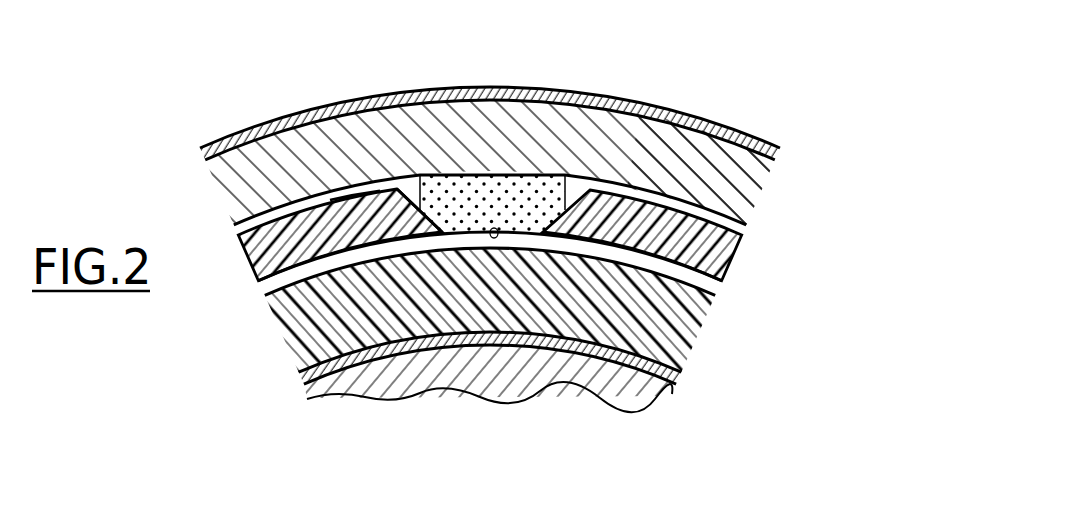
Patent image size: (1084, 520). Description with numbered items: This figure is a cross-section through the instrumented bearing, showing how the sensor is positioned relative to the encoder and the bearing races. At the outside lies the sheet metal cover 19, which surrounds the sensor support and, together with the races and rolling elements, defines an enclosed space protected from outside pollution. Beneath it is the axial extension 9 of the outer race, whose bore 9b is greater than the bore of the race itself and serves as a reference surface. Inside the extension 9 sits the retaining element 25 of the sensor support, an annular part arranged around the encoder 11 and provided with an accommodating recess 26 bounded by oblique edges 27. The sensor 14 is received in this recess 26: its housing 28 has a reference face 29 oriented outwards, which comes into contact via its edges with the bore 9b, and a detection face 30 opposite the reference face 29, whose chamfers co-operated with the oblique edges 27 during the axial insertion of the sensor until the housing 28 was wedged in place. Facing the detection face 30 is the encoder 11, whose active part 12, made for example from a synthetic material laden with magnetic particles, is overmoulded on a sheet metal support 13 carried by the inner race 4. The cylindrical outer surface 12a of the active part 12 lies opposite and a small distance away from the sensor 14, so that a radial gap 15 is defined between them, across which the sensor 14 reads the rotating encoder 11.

The inner race 4 is at (652, 393).
The axial extension 9 is at (282, 157).
The bore 9b is at (257, 208).
The encoder 11 is at (704, 178).
The active part 12 is at (653, 312).
The cylindrical outer surface 12a is at (703, 284).
The sheet metal support 13 is at (683, 376).
The sensor 14 is at (470, 243).
The radial gap 15 is at (578, 193).
The cover 19 is at (326, 110).
The retaining element 25 is at (356, 193).
The accommodating recess 26 is at (407, 192).
The oblique edges 27 is at (431, 180).
The housing 28 is at (466, 190).
The reference face 29 is at (494, 228).
The detection face 30 is at (518, 240).